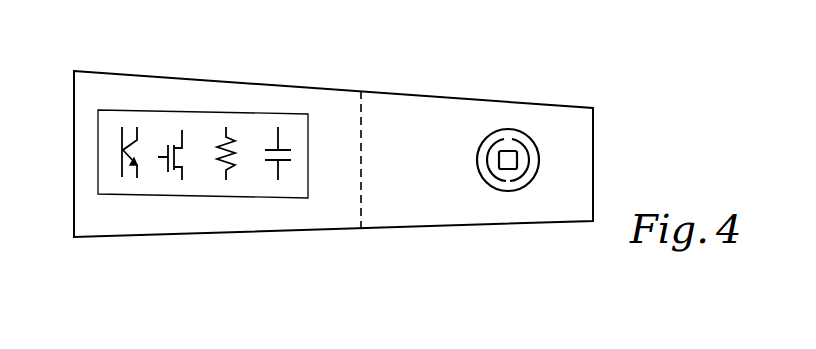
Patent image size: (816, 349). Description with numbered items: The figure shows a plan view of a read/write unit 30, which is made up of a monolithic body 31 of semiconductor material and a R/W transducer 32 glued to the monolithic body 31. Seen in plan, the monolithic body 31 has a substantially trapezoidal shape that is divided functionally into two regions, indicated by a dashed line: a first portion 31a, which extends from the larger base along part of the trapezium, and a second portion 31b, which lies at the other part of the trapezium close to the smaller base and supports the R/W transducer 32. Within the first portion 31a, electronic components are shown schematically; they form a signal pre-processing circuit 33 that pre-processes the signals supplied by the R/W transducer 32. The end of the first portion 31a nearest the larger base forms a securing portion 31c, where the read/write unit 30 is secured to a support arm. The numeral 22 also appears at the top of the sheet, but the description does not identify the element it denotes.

The read/write unit 30 is at (329, 118).
The monolithic body 31 is at (351, 233).
The first portion 31a is at (320, 113).
The second portion 31b is at (466, 114).
The securing portion 31c is at (87, 100).
The R/W transducer 32 is at (512, 171).
The signal pre-processing circuit 33 is at (270, 188).
The carrier member 22 is at (531, 12).